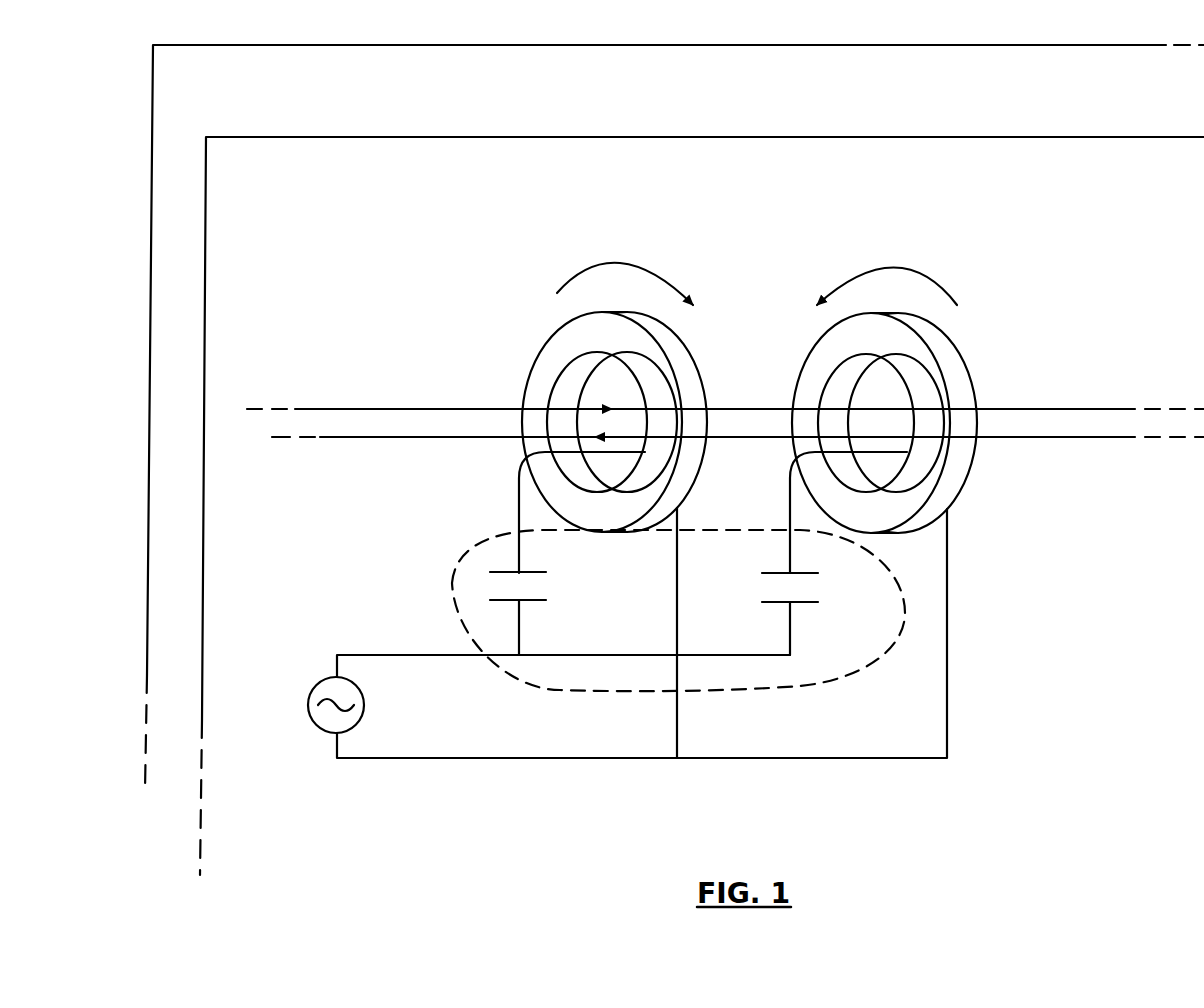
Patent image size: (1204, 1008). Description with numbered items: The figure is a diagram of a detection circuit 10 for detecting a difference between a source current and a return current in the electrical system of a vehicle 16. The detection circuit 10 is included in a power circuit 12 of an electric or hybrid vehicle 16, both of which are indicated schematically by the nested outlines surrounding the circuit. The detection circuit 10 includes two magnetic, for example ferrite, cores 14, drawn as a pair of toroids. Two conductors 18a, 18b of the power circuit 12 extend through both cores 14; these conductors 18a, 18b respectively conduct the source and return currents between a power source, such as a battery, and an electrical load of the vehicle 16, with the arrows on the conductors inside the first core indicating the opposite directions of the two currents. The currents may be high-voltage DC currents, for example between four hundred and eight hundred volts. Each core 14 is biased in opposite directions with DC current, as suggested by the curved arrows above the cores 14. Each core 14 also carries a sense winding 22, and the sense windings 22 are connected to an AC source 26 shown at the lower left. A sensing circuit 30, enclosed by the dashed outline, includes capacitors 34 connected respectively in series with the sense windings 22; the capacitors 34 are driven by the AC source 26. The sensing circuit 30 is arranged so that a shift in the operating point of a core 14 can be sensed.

The detection circuit 10 is at (327, 276).
The power circuit 12 is at (790, 137).
The magnetic core 14 is at (552, 333).
The vehicle 16 is at (525, 46).
The conductor 18a is at (1073, 409).
The conductor 18b is at (1073, 437).
The sense winding 22 is at (545, 452).
The AC source 26 is at (333, 735).
The sensing circuit 30 is at (457, 608).
The capacitor 34 is at (530, 604).